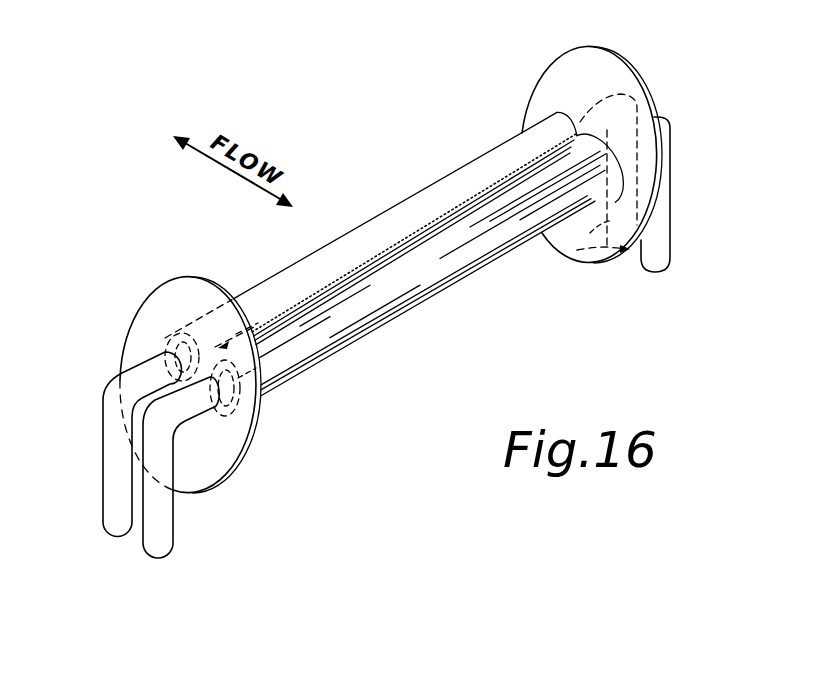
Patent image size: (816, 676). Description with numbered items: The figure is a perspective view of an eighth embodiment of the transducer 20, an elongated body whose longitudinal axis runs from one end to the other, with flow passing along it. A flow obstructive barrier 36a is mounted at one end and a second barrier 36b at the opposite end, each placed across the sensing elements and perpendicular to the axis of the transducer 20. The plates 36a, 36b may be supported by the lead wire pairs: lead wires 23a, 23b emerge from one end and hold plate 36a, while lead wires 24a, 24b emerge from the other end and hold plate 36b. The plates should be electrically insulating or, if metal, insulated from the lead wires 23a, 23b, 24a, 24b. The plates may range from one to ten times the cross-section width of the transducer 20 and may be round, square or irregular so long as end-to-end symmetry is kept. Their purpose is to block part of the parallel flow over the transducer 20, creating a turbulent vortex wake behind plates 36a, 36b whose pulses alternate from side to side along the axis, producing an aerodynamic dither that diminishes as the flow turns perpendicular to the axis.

The transducer 20 is at (343, 352).
The flow obstructive barrier 36a is at (152, 310).
The flow obstructive barrier 36b is at (545, 88).
The lead wire 23a is at (118, 500).
The lead wire 23b is at (162, 542).
The lead wire 24a is at (570, 263).
The lead wire 24b is at (657, 257).